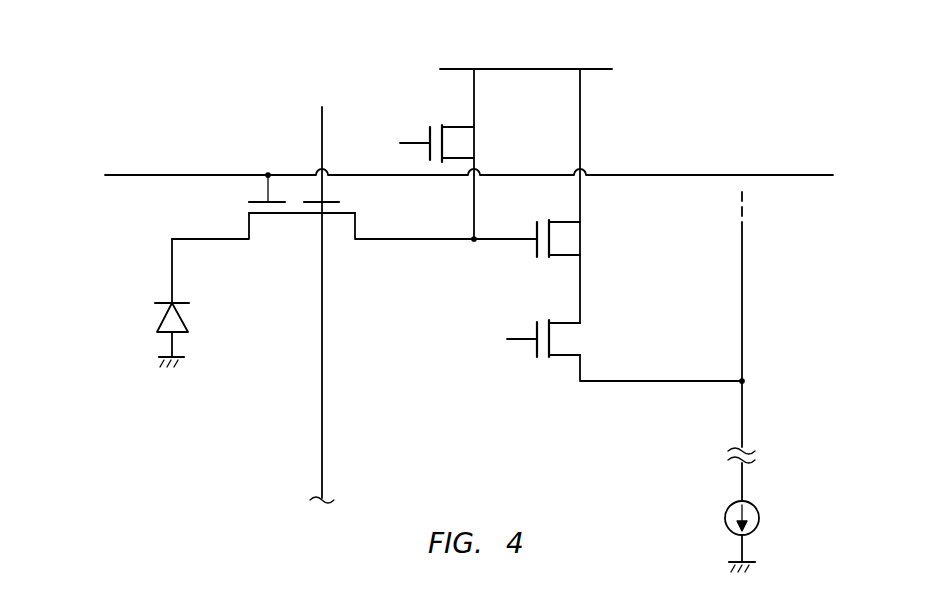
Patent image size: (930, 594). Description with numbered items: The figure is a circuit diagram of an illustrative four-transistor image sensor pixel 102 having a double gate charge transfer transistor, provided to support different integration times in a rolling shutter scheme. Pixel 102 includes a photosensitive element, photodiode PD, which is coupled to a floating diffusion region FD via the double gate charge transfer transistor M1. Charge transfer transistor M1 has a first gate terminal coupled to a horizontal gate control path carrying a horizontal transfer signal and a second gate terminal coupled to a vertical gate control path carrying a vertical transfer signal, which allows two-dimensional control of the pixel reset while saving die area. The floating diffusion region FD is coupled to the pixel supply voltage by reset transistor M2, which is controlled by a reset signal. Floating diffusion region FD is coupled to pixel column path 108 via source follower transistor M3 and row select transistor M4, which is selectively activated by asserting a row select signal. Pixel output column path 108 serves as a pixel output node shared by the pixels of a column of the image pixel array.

The pixel 102 is at (126, 83).
The pixel column path 108 is at (742, 278).
The double gate charge transfer transistor M1 is at (298, 222).
The reset transistor M2 is at (432, 150).
The source follower transistor M3 is at (572, 271).
The row select transistor M4 is at (604, 350).
The photodiode PD is at (154, 303).
The floating diffusion region FD is at (468, 245).